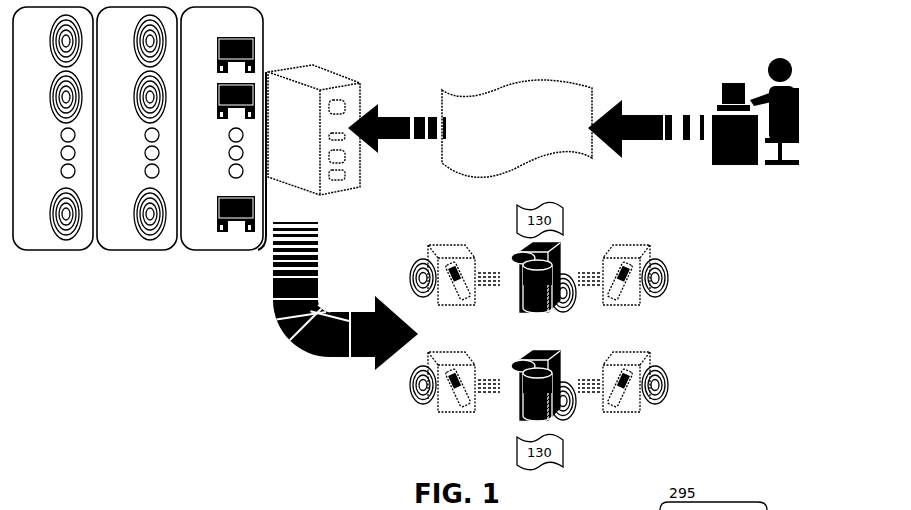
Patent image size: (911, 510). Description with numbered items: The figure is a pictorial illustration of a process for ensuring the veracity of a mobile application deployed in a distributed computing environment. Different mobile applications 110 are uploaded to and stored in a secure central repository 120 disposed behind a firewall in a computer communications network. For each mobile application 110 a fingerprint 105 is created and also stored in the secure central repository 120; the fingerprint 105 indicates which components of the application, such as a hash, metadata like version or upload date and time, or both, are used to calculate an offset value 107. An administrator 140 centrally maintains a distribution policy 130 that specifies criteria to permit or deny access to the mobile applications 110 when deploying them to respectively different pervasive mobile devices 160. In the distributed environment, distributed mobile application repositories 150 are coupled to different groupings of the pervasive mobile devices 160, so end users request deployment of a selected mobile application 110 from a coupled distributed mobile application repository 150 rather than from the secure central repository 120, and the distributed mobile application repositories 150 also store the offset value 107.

The fingerprint 105 is at (387, 219).
The offset value 107 is at (588, 414).
The mobile application 110 is at (221, 134).
The secure central repository 120 is at (314, 121).
The distribution policy 130 is at (517, 275).
The administrator 140 is at (755, 111).
The distributed mobile application repository 150 is at (543, 332).
The pervasive mobile device 160 is at (539, 332).